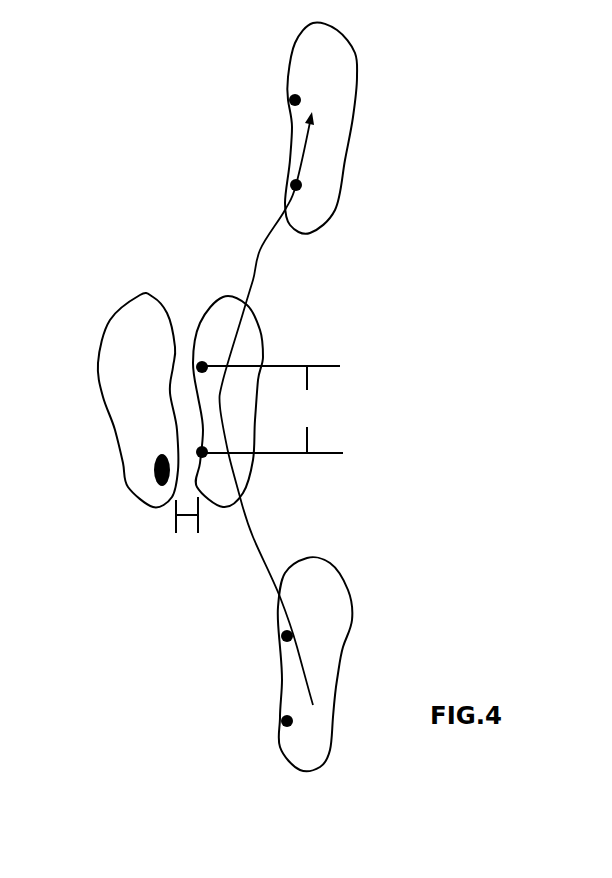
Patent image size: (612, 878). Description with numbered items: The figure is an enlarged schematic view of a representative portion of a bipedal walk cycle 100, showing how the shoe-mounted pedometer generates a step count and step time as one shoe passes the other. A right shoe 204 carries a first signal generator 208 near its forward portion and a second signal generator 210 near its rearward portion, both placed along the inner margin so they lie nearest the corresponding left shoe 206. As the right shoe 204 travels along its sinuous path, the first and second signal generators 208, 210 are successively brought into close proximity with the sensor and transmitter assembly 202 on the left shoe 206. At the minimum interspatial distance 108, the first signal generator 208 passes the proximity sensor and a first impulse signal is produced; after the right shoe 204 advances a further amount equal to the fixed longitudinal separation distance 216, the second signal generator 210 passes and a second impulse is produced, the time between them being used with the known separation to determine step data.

The bipedal walk cycle 100 is at (424, 253).
The minimum interspatial distance 108 is at (179, 520).
The sensor and transmitter assembly 202 is at (154, 473).
The right shoe 204 is at (355, 620).
The left shoe 206 is at (98, 342).
The first signal generator 208 is at (287, 636).
The second signal generator 210 is at (287, 721).
The fixed longitudinal separation distance 216 is at (272, 409).